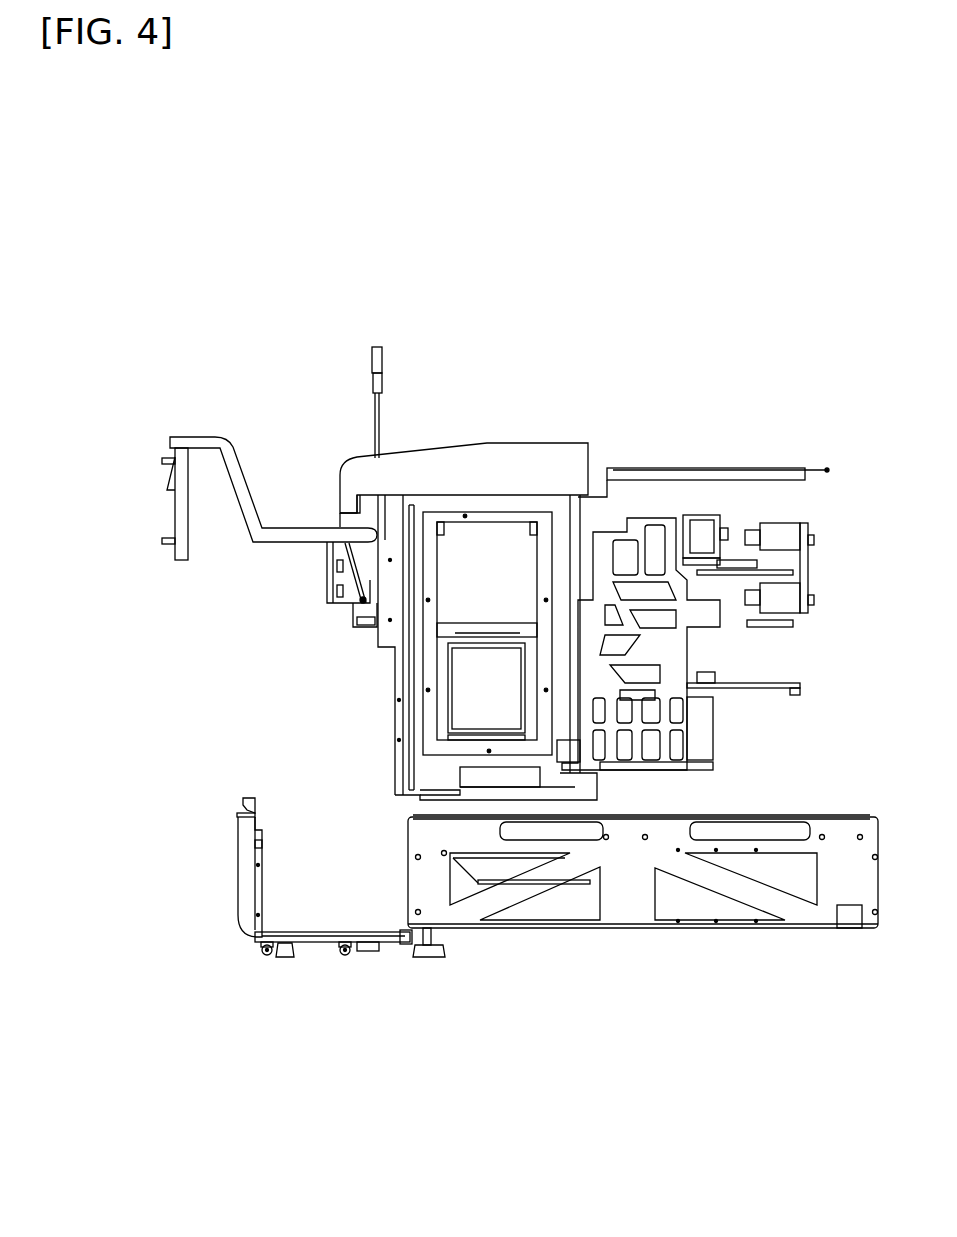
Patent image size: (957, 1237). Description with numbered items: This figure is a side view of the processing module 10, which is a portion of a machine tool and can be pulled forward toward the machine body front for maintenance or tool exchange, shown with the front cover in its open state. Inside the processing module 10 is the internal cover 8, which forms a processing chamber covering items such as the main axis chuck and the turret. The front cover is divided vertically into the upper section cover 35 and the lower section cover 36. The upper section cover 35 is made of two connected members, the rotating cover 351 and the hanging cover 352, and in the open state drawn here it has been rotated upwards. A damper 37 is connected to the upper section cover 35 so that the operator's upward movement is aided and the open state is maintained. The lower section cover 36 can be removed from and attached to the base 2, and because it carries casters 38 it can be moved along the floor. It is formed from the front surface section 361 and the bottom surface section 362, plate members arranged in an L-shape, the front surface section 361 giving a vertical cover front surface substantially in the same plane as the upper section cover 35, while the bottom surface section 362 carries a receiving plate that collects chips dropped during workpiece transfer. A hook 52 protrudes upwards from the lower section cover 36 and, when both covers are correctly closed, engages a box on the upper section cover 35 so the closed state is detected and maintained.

The base 2 is at (633, 903).
The internal cover 8 is at (497, 533).
The processing module 10 is at (737, 523).
The upper section cover 35 is at (249, 439).
The rotating cover 351 is at (215, 437).
The hanging cover 352 is at (175, 500).
The lower section cover 36 is at (268, 899).
The front surface section 361 is at (248, 852).
The bottom surface section 362 is at (320, 940).
The damper 37 is at (327, 560).
The casters 38 is at (343, 953).
The hook 52 is at (250, 800).